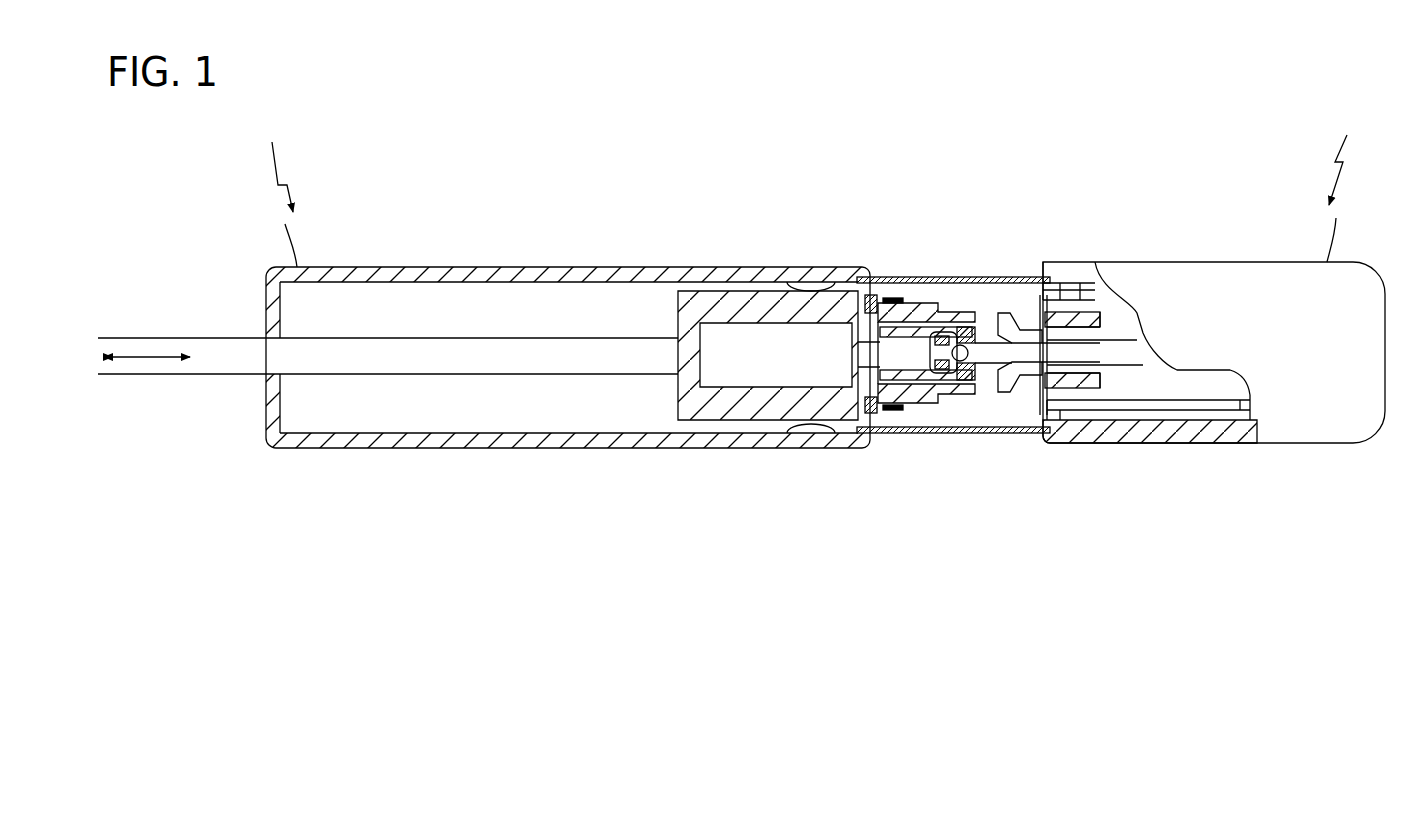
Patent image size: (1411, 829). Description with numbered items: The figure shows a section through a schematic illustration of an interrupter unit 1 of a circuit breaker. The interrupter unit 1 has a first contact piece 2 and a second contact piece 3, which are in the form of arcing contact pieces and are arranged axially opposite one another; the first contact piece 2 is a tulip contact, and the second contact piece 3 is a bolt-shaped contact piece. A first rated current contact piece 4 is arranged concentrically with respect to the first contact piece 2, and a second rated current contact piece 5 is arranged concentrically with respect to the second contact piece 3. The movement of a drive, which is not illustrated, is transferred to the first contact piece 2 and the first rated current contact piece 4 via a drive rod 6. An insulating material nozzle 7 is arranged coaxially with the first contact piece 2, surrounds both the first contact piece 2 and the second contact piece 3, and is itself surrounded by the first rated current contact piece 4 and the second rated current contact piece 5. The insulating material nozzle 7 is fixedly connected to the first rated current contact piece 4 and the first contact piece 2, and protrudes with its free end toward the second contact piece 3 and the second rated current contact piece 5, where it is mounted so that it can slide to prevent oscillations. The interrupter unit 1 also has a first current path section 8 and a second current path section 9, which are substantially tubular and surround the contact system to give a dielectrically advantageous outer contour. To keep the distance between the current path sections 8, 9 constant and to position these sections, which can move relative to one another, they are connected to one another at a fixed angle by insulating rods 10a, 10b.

The interrupter unit 1 is at (723, 507).
The first contact piece 2 is at (975, 385).
The second contact piece 3 is at (1020, 385).
The first rated current contact piece 4 is at (897, 300).
The second rated current contact piece 5 is at (1030, 307).
The drive rod 6 is at (416, 338).
The insulating material nozzle 7 is at (950, 315).
The first current path section 8 is at (522, 448).
The second current path section 9 is at (1205, 443).
The insulating rod 10a is at (1033, 300).
The insulating rod 10b is at (1033, 433).